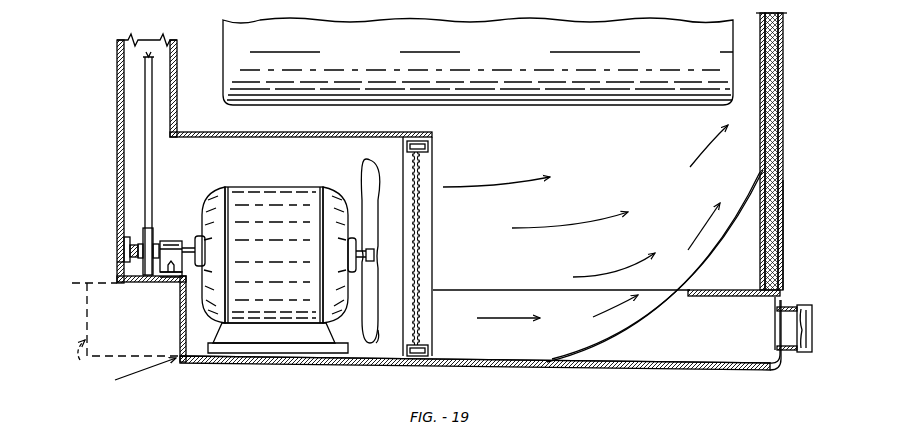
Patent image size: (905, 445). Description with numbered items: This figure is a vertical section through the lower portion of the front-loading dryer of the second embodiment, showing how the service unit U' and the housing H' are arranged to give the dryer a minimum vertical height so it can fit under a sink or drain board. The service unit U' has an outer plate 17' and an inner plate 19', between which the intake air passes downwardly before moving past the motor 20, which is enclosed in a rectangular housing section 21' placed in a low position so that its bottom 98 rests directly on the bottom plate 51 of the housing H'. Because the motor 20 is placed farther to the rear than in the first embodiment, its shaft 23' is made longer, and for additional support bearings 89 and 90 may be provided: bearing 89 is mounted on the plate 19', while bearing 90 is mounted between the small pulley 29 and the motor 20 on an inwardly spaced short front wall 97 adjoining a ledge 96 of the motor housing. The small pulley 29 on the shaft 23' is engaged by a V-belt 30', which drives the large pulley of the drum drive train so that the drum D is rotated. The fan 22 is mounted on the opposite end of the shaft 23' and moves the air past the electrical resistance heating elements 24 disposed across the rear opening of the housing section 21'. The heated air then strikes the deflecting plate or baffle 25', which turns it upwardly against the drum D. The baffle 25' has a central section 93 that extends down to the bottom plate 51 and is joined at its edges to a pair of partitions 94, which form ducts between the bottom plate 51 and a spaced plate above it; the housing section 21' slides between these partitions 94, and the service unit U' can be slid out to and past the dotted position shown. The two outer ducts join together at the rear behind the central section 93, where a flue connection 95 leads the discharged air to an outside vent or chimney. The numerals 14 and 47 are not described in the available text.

The outer plate 17' is at (128, 158).
The inner plate 19' is at (190, 88).
The rectangular housing section 21' is at (301, 123).
The V-belt 30' is at (166, 163).
The ledge 96 is at (145, 283).
The short front wall 97 is at (180, 328).
The bottom plate 51 is at (350, 366).
The service unit U' is at (126, 333).
The bearing 89 is at (128, 236).
The small pulley 29 is at (152, 228).
The bearing 90 is at (162, 240).
The motor shaft 23' is at (287, 247).
The motor 20 is at (280, 187).
The fan 22 is at (364, 166).
The bottom 98 is at (407, 350).
The electrical resistance heating elements 24 is at (420, 178).
The drum D is at (612, 105).
The housing H' is at (791, 151).
The wall insulation 14 is at (784, 250).
The partitions 94 is at (530, 290).
The central section 93 is at (636, 326).
The deflecting plate or baffle 25' is at (716, 236).
The flue connection 95 is at (806, 306).
The wall opening 47 is at (117, 262).